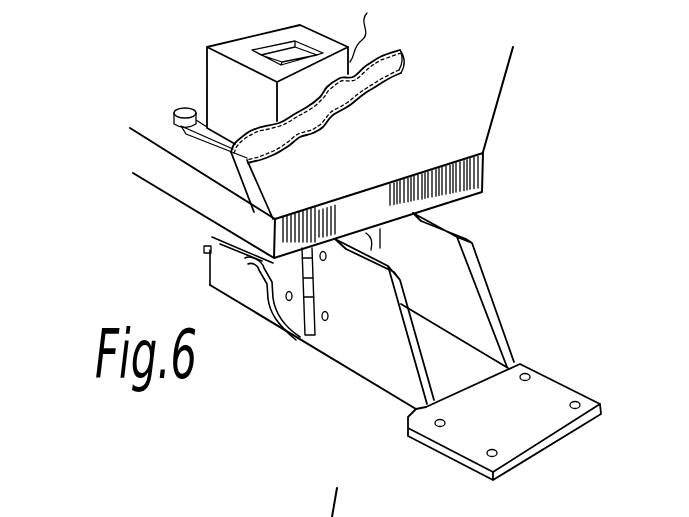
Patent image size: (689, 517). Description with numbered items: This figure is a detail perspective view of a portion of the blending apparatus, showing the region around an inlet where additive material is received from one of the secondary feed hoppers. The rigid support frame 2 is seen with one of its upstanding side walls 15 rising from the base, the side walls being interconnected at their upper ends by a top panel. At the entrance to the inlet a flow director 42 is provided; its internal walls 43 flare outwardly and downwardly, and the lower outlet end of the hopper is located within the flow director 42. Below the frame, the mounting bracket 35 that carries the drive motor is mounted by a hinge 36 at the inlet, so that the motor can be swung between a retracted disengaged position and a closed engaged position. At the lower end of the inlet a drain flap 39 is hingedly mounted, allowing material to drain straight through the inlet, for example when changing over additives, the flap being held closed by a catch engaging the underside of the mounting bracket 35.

The support frame 2 is at (487, 167).
The side wall 15 is at (475, 95).
The mounting bracket 35 is at (360, 340).
The hinge 36 is at (300, 298).
The drain flap 39 is at (248, 287).
The flow director 42 is at (190, 72).
The internal walls 43 is at (278, 53).